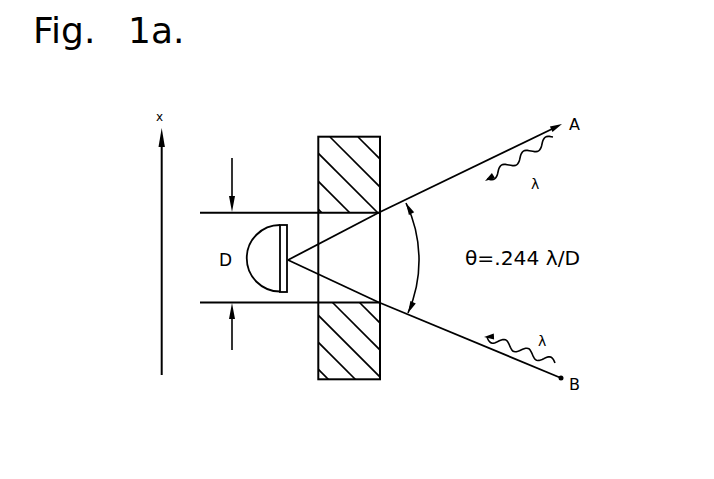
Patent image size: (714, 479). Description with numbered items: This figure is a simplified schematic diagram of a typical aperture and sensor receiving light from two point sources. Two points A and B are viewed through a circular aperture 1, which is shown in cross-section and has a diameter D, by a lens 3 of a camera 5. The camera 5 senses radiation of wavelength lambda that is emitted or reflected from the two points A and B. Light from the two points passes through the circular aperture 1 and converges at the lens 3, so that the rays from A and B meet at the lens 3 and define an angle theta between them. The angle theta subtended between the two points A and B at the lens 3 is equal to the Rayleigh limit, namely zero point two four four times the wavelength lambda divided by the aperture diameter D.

The circular aperture 1 is at (318, 158).
The lens 3 is at (282, 224).
The camera 5 is at (267, 295).